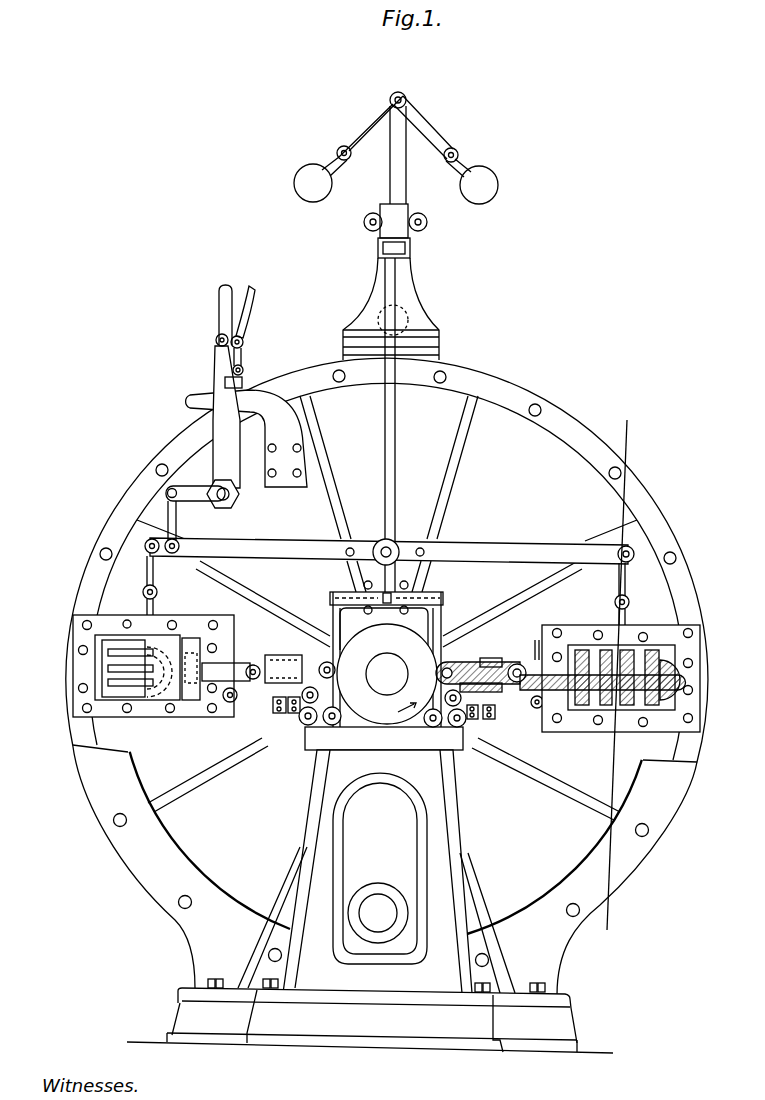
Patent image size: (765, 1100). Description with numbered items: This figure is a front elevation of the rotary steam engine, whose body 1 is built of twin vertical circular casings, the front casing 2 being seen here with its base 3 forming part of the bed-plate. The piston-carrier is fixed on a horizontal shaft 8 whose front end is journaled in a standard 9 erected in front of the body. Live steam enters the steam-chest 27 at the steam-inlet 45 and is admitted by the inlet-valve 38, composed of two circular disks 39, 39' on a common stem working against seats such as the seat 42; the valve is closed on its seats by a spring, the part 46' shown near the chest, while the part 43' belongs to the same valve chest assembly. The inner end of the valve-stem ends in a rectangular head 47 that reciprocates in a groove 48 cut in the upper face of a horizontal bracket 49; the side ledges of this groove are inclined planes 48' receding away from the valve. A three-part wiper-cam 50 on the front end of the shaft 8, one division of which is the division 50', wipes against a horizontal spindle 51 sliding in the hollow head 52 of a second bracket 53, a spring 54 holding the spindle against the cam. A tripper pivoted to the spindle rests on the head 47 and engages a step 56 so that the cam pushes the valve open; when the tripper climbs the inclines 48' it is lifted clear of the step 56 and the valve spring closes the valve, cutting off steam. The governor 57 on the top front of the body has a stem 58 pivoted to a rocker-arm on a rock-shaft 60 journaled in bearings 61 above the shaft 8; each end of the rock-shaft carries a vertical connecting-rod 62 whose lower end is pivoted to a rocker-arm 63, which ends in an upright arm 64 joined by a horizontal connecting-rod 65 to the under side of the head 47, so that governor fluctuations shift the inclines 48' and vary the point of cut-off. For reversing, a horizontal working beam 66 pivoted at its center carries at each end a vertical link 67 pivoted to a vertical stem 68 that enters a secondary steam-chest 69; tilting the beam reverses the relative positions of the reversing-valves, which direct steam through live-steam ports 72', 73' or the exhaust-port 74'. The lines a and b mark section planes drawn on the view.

The body of the engine 1 is at (400, 492).
The circular casing 2 is at (387, 613).
The base 3 is at (370, 1016).
The horizontal shaft 8 is at (387, 674).
The standard 9 is at (384, 738).
The steam-chest 27 is at (621, 673).
The live-steam inlet-valve 38 is at (632, 702).
The circular disk 39 is at (655, 615).
The circular disk 39' is at (612, 623).
The valve seat 42 is at (625, 698).
The cylinder 43' is at (624, 651).
The steam-inlet 45 is at (150, 700).
The piston rod 46' is at (636, 714).
The rectangular head 47 is at (195, 702).
The groove 48 is at (532, 716).
The inclined plane 48' is at (236, 476).
The horizontal bracket 49 is at (236, 702).
The three-part wiper-cam 50 is at (387, 674).
The cam division 50' is at (481, 665).
The horizontal spindle 51 is at (320, 663).
The hollow head 52 is at (290, 656).
The second horizontal bracket 53 is at (534, 671).
The spring 54 is at (490, 658).
The step 56 is at (240, 665).
The governor 57 is at (396, 226).
The governor stem 58 is at (400, 425).
The rock-shaft 60 is at (447, 600).
The bearing 61 is at (362, 590).
The vertical connecting-rod 62 is at (335, 613).
The horizontal rocker-arm 63 is at (318, 724).
The upright arm 64 is at (437, 727).
The horizontal connecting-rod 65 is at (480, 720).
The working beam 66 is at (389, 551).
The vertical link 67 is at (396, 548).
The vertical stem 68 is at (392, 615).
The secondary steam-chest 69 is at (126, 626).
The live-steam port 72' is at (74, 644).
The live-steam port 73' is at (79, 689).
The exhaust-port 74' is at (74, 664).
The section line a is at (618, 666).
The section line b is at (605, 936).